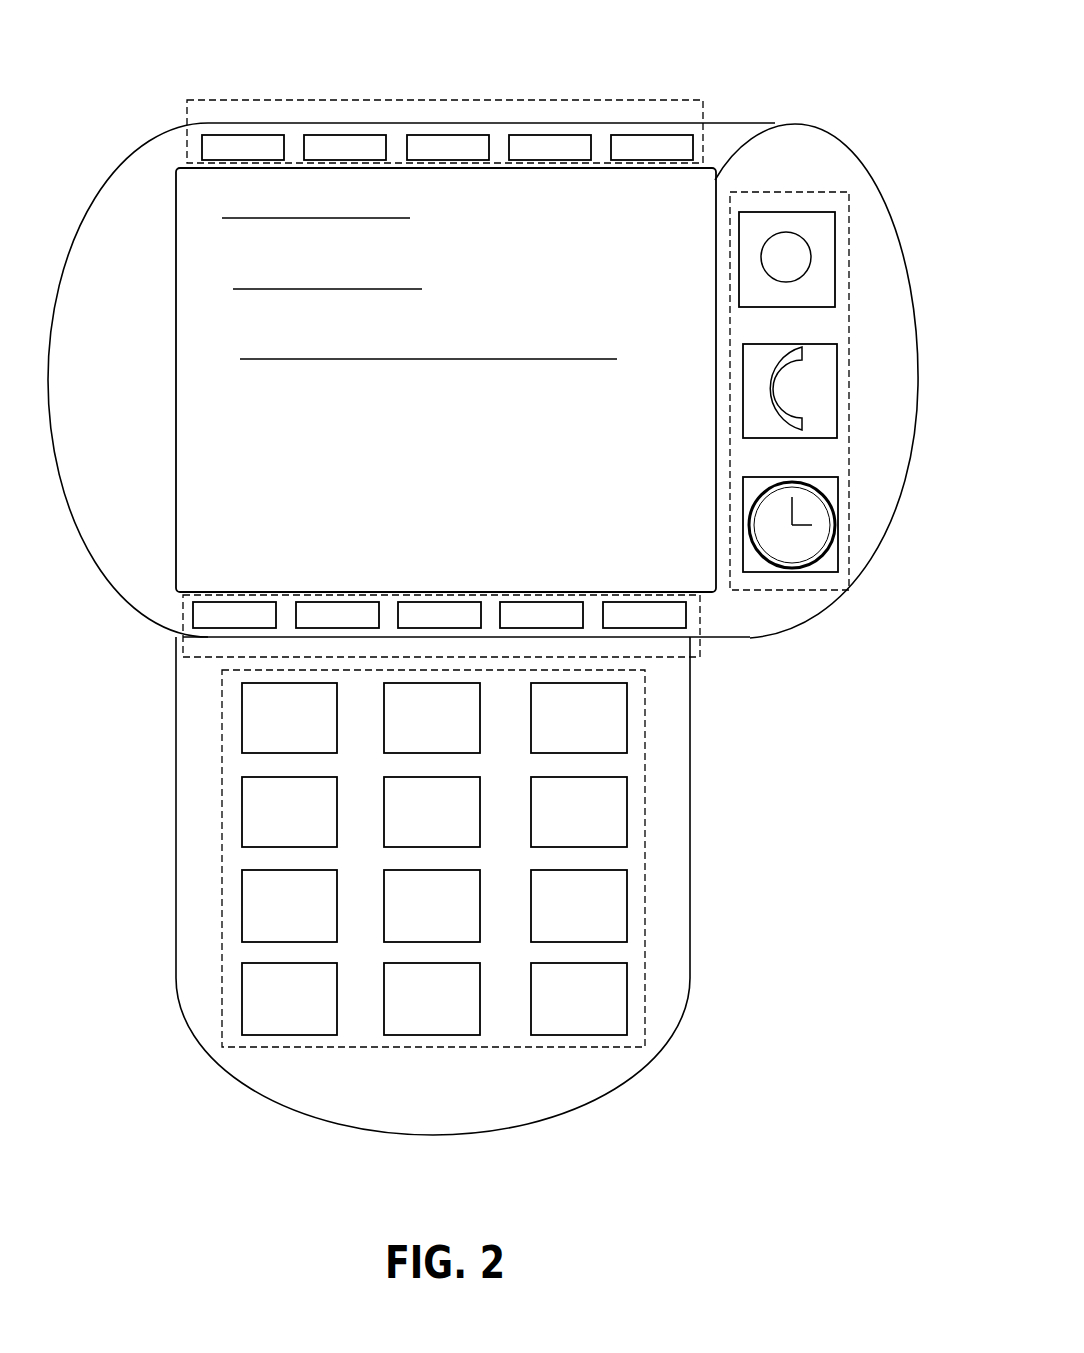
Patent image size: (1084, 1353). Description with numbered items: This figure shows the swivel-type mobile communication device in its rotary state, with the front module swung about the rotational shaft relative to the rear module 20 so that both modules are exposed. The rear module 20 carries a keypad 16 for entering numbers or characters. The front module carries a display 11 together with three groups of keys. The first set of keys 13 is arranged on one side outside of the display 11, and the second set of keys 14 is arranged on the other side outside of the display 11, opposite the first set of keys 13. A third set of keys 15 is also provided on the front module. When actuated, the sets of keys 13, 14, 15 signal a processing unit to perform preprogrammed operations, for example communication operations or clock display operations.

The display 11 is at (775, 127).
The first set of keys 13 is at (658, 657).
The second set of keys 14 is at (355, 100).
The third set of keys 15 is at (773, 592).
The keypad 16 is at (647, 850).
The rear module 20 is at (527, 1130).